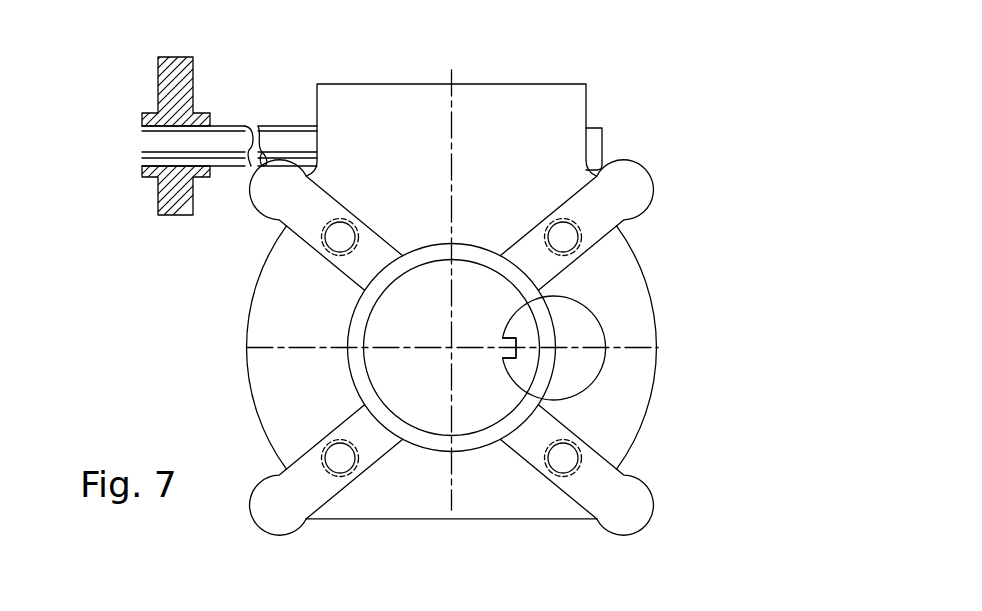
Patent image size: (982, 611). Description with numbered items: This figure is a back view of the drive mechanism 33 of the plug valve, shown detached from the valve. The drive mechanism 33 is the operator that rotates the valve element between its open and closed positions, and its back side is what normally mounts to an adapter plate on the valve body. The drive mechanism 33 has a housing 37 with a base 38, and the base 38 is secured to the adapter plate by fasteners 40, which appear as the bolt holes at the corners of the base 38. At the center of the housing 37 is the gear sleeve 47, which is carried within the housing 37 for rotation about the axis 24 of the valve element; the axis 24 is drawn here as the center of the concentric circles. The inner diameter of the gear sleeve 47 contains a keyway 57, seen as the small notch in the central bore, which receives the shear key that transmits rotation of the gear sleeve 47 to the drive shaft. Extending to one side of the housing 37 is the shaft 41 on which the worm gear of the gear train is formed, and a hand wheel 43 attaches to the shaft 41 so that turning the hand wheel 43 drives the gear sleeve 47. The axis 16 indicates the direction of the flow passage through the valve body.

The axis 16 is at (317, 347).
The axis of valve element 24 is at (452, 348).
The drive mechanism 33 is at (694, 293).
The housing 37 is at (558, 108).
The base 38 is at (612, 210).
The fasteners 40 is at (563, 458).
The shaft 41 is at (225, 138).
The hand wheel 43 is at (158, 193).
The gear sleeve 47 is at (512, 383).
The keyway 57 is at (508, 360).